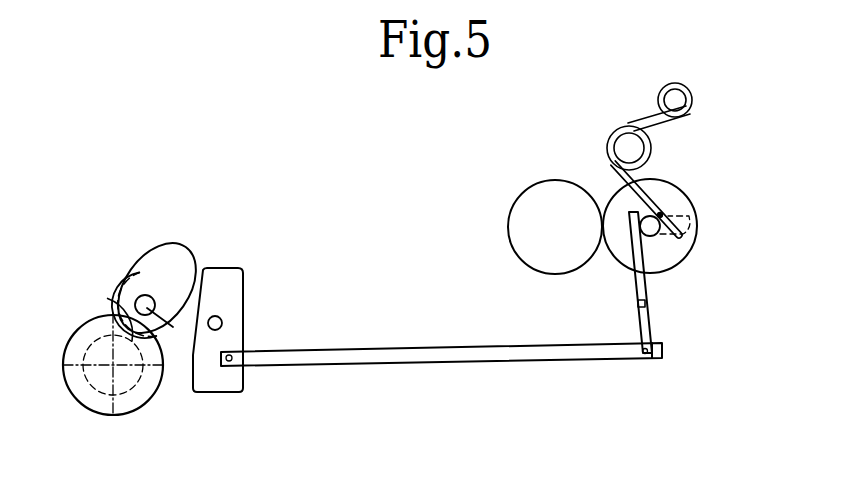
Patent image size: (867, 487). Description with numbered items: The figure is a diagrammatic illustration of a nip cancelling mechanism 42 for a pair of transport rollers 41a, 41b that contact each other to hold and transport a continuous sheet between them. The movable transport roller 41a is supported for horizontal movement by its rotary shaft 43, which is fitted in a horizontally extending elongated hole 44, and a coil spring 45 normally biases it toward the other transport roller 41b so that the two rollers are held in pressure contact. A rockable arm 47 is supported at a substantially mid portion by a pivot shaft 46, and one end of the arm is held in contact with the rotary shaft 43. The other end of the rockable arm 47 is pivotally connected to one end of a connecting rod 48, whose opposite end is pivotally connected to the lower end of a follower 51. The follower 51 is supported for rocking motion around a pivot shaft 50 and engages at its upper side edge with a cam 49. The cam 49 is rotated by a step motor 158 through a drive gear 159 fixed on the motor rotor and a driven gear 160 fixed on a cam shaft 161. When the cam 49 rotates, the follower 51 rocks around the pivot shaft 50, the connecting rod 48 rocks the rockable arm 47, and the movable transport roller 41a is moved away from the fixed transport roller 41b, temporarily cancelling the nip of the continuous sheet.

The transport roller 41a is at (688, 250).
The transport roller 41b is at (532, 192).
The nip cancelling mechanism 42 is at (426, 234).
The rotary shaft 43 is at (660, 213).
The elongated hole 44 is at (698, 213).
The coil spring 45 is at (607, 133).
The pivot shaft 46 is at (647, 303).
The rockable arm 47 is at (628, 287).
The connecting rod 48 is at (442, 353).
The cam 49 is at (130, 270).
The pivot shaft 50 is at (222, 320).
The follower 51 is at (232, 280).
The step motor 158 is at (127, 413).
The drive gear 159 is at (80, 403).
The driven gear 160 is at (157, 273).
The cam shaft 161 is at (170, 330).